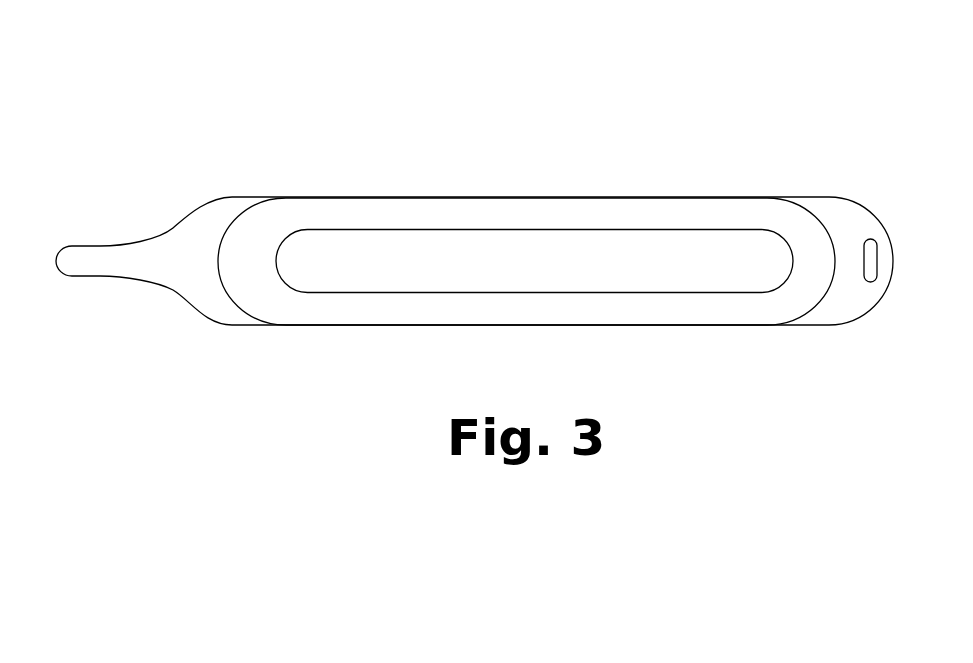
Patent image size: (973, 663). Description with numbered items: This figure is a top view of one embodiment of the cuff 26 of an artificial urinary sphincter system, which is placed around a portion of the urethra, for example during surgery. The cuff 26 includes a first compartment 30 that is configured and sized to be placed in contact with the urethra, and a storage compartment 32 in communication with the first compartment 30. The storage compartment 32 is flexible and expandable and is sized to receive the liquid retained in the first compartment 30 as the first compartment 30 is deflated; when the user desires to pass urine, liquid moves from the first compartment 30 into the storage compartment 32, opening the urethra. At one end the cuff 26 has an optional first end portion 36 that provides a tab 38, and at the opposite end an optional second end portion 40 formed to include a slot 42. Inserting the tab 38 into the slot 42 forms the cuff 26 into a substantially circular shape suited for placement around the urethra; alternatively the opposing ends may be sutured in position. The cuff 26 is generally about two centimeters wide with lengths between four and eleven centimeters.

The cuff 26 is at (505, 197).
The first compartment 30 is at (498, 260).
The storage compartment 32 is at (620, 210).
The first end portion 36 is at (157, 260).
The tab 38 is at (77, 268).
The second end portion 40 is at (863, 222).
The slot 42 is at (877, 260).